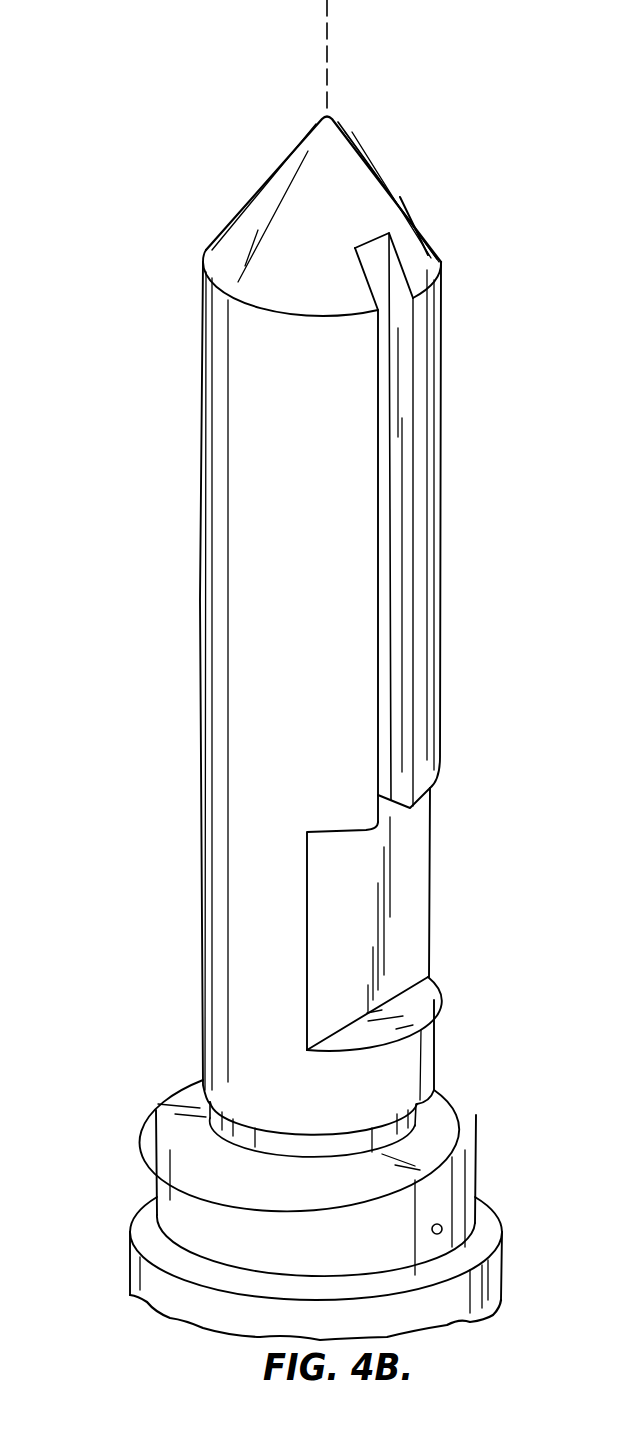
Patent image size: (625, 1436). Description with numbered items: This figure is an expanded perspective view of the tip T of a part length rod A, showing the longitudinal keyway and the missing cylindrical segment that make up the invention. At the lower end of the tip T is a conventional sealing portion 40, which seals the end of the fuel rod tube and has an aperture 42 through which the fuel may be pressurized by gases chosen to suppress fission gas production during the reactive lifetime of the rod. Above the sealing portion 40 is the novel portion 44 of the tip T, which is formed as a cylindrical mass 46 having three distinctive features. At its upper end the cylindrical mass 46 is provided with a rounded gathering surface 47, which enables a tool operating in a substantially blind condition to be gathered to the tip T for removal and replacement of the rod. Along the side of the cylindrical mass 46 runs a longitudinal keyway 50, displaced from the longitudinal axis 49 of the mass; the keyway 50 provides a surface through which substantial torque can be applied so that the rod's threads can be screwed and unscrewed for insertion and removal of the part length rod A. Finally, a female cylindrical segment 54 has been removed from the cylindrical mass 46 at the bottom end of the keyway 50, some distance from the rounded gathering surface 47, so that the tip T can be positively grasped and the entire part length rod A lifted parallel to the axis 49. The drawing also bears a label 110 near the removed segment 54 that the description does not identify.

The longitudinal axis 49 is at (329, 36).
The rounded gathering surface 47 is at (445, 241).
The cylindrical mass 46 is at (243, 530).
The longitudinal keyway 50 is at (400, 540).
The tip T is at (450, 795).
The shoulder 110 is at (324, 850).
The female cylindrical segment 54 is at (378, 926).
The portion 44 is at (160, 127).
The sealing portion 40 is at (145, 1100).
The part length rod A is at (130, 1260).
The aperture 42 is at (442, 1230).